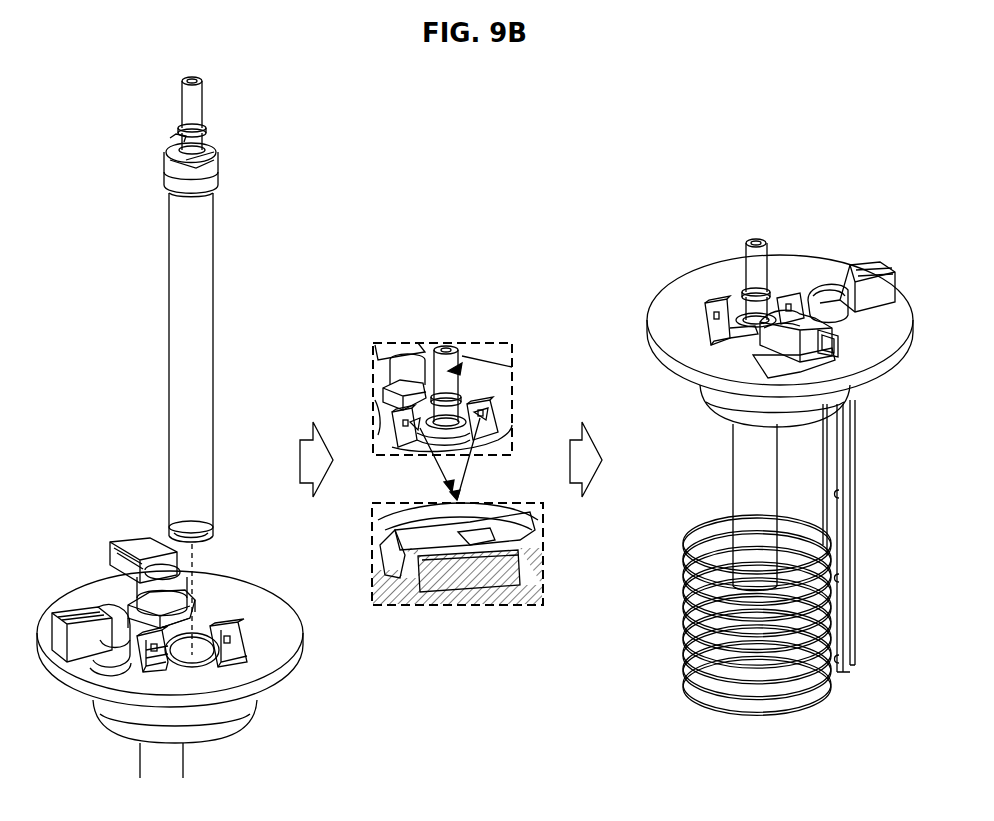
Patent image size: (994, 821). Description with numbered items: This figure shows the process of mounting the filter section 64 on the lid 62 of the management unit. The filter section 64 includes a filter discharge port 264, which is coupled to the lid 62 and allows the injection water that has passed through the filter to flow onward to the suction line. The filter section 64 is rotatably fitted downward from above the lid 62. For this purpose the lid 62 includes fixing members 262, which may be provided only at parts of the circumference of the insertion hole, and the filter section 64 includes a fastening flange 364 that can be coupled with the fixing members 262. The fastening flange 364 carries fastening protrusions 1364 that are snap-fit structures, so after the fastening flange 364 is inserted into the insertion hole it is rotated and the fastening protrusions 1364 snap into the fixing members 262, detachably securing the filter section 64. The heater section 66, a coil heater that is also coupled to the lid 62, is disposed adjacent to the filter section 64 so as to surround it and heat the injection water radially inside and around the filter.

The lid 62 is at (268, 608).
The filter section 64 is at (727, 478).
The heater section 66 is at (810, 692).
The fixing members 262 is at (225, 628).
The filter discharge port 264 is at (195, 110).
The fastening flange 364 is at (482, 576).
The fastening protrusions 1364 is at (470, 404).